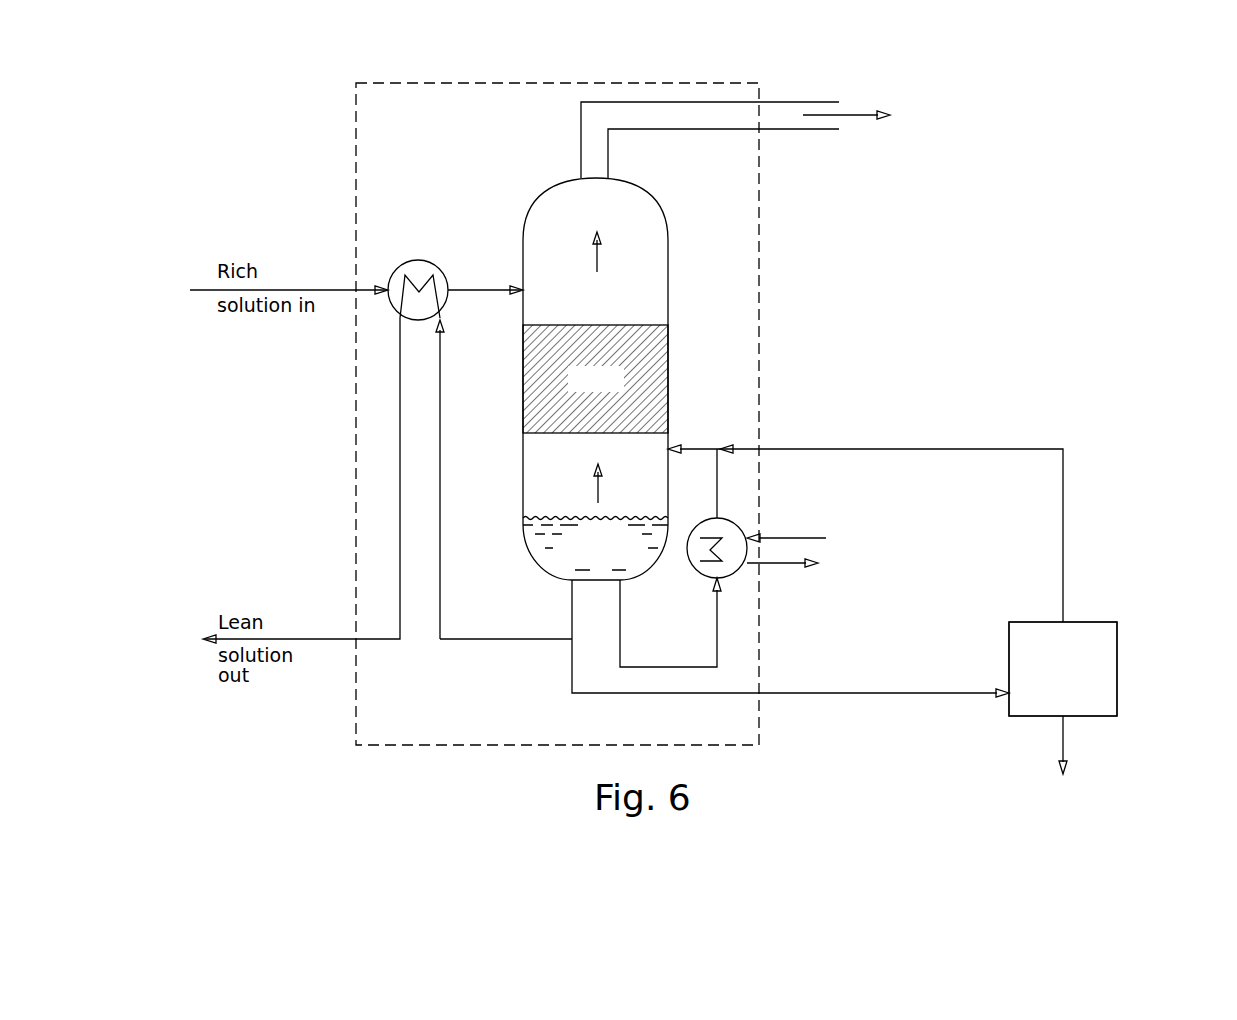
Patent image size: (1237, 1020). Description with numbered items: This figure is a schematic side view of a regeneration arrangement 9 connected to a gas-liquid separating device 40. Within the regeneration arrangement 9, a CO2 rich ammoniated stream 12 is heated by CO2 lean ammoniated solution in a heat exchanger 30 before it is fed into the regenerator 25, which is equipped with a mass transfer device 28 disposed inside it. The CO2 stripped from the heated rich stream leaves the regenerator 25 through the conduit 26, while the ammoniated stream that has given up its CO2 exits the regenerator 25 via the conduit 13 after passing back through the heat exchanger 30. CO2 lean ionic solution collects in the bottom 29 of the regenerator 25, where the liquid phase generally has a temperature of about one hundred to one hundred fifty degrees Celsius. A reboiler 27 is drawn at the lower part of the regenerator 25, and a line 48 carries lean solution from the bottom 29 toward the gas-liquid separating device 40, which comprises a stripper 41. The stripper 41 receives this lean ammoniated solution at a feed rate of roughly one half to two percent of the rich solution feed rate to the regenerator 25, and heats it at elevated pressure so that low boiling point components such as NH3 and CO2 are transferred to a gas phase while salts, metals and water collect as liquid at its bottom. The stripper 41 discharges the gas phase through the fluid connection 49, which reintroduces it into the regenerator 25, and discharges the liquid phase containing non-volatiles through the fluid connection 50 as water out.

The regeneration arrangement 9 is at (357, 150).
The CO2 rich ammoniated gas stream 12 is at (366, 290).
The conduit 13 is at (380, 640).
The regenerator 25 is at (541, 199).
The conduit 26 is at (645, 129).
The reboiler 27 is at (702, 577).
The mass transfer device 28 is at (669, 377).
The bottom of the regenerator 29 is at (544, 553).
The heat exchanger 30 is at (432, 262).
The gas-liquid separating device 40 is at (1094, 612).
The stripper 41 is at (1118, 668).
The lean solution line to stripper 48 is at (706, 694).
The fluid connection 49 is at (865, 444).
The fluid connection 50 is at (1063, 730).